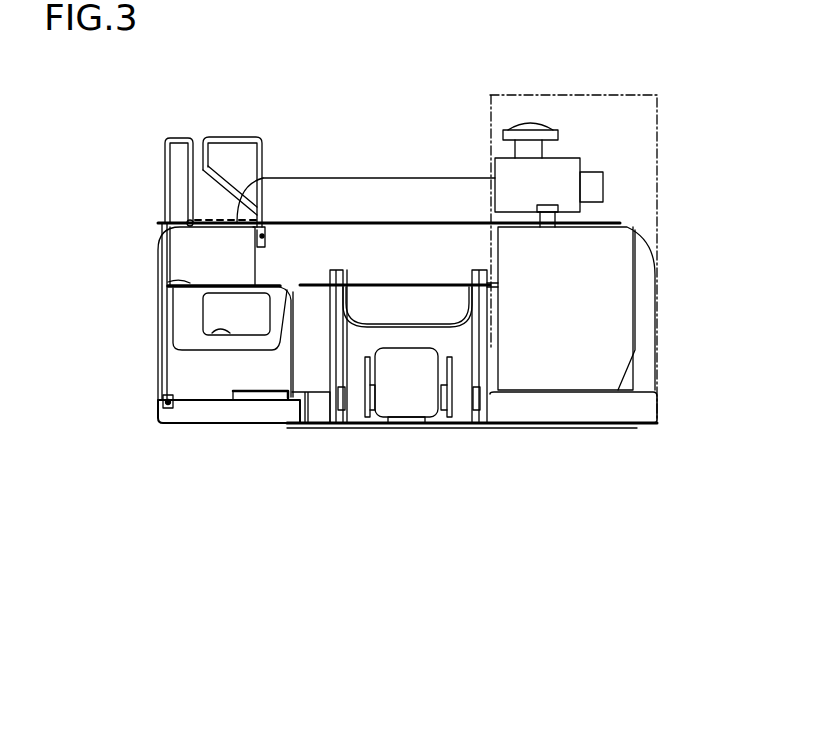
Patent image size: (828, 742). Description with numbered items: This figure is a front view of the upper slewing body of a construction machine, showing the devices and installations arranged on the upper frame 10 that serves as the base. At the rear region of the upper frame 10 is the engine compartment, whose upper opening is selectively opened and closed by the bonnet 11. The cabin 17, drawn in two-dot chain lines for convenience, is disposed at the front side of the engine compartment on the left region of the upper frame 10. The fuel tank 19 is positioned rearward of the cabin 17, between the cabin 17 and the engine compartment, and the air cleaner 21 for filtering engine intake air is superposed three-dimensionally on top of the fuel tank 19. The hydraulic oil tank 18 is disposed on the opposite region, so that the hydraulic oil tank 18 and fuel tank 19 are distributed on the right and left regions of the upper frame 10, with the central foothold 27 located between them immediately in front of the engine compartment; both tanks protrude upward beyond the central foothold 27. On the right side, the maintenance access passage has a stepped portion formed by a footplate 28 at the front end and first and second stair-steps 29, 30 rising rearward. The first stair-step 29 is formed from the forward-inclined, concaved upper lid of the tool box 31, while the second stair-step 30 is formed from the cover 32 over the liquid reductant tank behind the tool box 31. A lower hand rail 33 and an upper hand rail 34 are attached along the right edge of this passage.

The upper frame 10 is at (473, 428).
The bonnet 11 is at (405, 178).
The cabin 17 is at (597, 95).
The hydraulic oil tank 18 is at (173, 250).
The fuel tank 19 is at (632, 300).
The air cleaner 21 is at (572, 158).
The central foothold 27 is at (390, 283).
The footplate 28 is at (258, 400).
The first stair-step 29 is at (225, 330).
The second stair-step 30 is at (277, 283).
The tool box 31 is at (193, 383).
The cover 32 is at (168, 280).
The lower hand rail 33 is at (175, 138).
The upper hand rail 34 is at (233, 137).